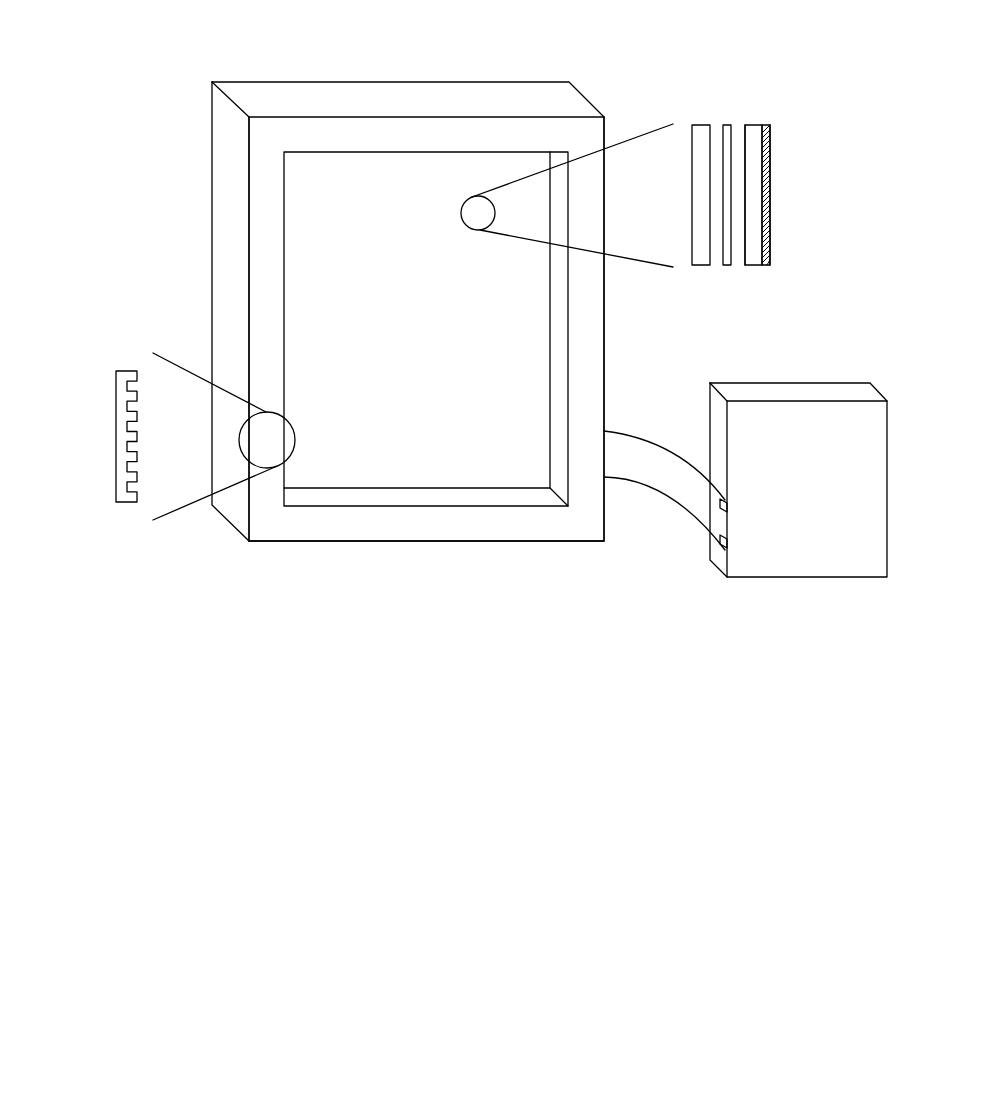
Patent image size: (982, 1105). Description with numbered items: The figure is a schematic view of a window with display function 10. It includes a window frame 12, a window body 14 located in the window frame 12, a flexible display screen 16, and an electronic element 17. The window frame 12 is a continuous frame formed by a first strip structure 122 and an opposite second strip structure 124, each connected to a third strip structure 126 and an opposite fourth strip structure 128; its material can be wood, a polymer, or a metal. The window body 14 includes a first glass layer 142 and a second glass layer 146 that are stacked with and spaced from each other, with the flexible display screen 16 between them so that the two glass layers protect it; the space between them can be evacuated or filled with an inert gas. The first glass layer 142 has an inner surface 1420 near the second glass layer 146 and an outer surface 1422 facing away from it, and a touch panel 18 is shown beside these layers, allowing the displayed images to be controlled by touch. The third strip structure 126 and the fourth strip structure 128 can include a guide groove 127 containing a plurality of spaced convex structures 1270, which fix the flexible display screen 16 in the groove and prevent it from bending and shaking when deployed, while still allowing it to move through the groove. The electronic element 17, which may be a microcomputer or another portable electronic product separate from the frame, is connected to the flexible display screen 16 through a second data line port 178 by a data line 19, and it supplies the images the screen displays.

The window with display function 10 is at (378, 40).
The window frame 12 is at (238, 163).
The first strip structure 122 is at (503, 103).
The second strip structure 124 is at (457, 528).
The third strip structure 126 is at (250, 350).
The fourth strip structure 128 is at (586, 395).
The guide groove 127 is at (143, 482).
The convex structures 1270 is at (142, 382).
The window body 14 is at (784, 60).
The first glass layer 142 is at (753, 128).
The inner surface 1420 is at (743, 237).
The outer surface 1422 is at (762, 127).
The second glass layer 146 is at (700, 132).
The flexible display screen 16 is at (725, 265).
The touch panel 18 is at (772, 182).
The electronic element 17 is at (788, 395).
The second data line port 178 is at (723, 507).
The data line 19 is at (660, 488).